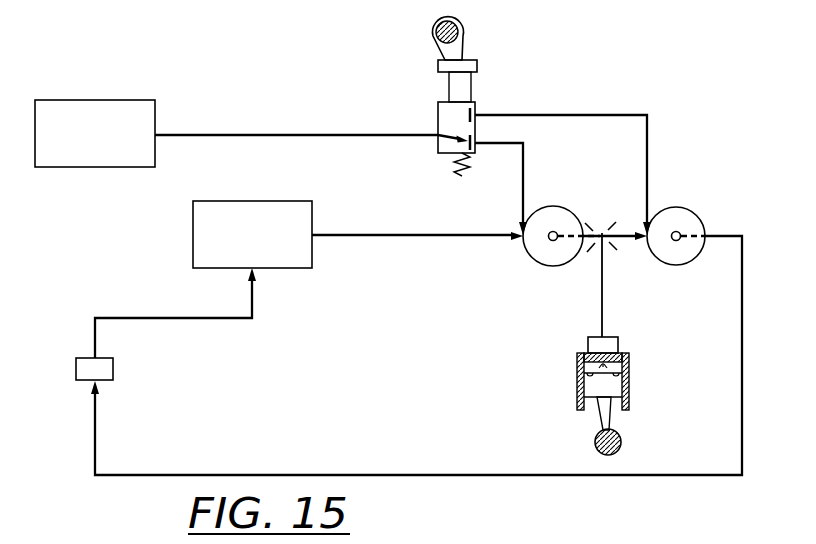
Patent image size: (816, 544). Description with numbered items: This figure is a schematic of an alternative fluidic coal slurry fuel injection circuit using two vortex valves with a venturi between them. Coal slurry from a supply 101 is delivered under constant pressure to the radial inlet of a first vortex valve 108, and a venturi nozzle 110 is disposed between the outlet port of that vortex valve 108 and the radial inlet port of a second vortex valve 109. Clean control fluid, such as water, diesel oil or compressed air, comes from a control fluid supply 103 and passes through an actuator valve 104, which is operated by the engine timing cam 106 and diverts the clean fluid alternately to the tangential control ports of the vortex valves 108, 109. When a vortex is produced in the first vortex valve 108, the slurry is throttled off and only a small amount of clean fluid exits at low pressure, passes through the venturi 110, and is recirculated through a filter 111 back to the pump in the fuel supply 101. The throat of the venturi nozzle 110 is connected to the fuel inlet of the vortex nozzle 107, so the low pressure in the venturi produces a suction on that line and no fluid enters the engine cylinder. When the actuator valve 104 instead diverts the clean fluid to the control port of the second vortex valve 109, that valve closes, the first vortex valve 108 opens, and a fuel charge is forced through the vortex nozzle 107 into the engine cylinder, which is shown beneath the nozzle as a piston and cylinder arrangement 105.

The coal slurry supply 101 is at (270, 201).
The control fluid supply 103 is at (113, 100).
The actuator valve 104 is at (438, 108).
The hydraulic cylinder 105 is at (629, 386).
The timing cam 106 is at (433, 37).
The vortex nozzle 107 is at (588, 346).
The vortex valve 108 is at (533, 265).
The vortex valve 109 is at (698, 210).
The venturi nozzle 110 is at (597, 250).
The filter 111 is at (113, 366).